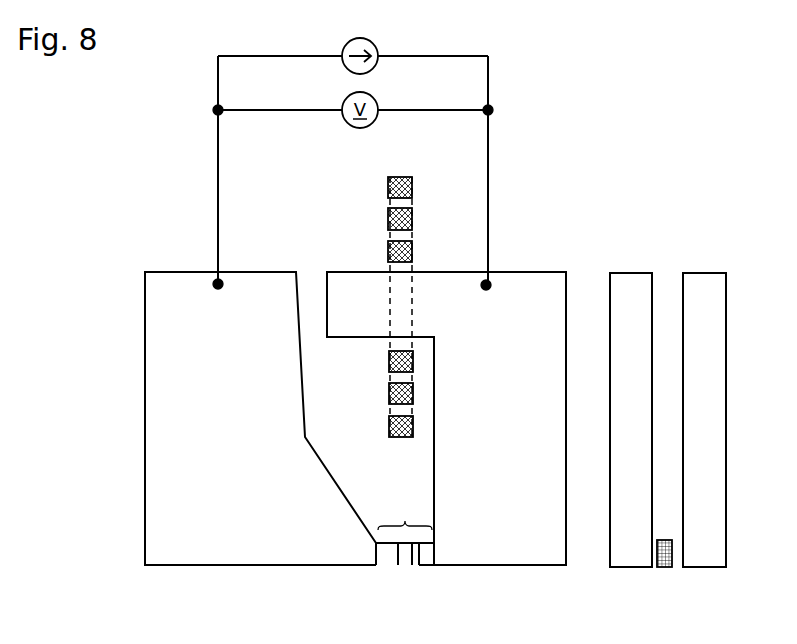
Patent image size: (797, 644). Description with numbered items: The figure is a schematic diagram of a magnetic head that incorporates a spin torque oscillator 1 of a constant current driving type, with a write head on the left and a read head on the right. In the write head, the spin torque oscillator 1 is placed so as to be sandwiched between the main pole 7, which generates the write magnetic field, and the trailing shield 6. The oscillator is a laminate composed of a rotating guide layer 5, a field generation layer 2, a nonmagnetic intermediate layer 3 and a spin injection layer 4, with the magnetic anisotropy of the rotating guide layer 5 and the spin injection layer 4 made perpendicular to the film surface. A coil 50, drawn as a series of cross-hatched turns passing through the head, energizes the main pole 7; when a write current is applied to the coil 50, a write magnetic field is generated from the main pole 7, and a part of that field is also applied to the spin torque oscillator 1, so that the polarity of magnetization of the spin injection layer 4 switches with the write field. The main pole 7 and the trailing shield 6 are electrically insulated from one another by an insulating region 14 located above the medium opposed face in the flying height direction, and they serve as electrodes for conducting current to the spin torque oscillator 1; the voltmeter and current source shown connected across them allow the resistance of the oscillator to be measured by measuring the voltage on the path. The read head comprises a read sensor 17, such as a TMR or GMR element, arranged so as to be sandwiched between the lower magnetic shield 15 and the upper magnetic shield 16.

The spin torque oscillator 1 is at (410, 557).
The field generation layer 2 is at (403, 560).
The nonmagnetic intermediate layer 3 is at (416, 560).
The spin injection layer 4 is at (428, 558).
The rotating guide layer 5 is at (381, 558).
The trailing shield 6 is at (312, 556).
The main pole 7 is at (472, 556).
The insulating region 14 is at (313, 280).
The lower magnetic shield 15 is at (704, 280).
The upper magnetic shield 16 is at (630, 280).
The read sensor 17 is at (665, 568).
The coil 50 is at (388, 218).